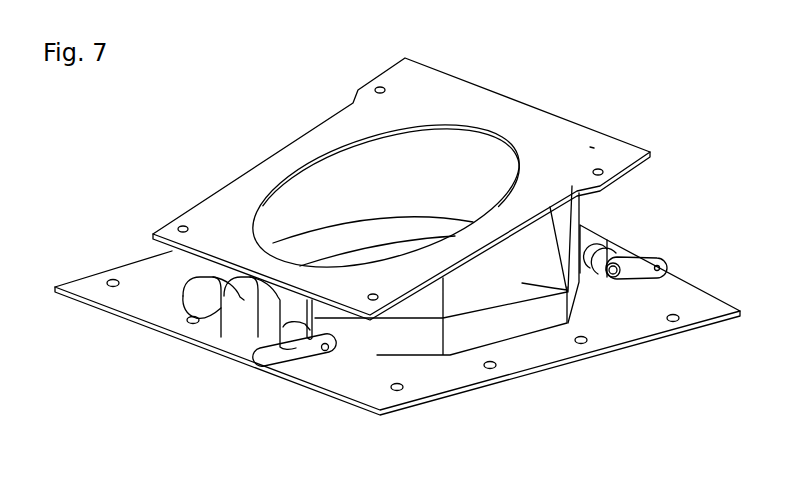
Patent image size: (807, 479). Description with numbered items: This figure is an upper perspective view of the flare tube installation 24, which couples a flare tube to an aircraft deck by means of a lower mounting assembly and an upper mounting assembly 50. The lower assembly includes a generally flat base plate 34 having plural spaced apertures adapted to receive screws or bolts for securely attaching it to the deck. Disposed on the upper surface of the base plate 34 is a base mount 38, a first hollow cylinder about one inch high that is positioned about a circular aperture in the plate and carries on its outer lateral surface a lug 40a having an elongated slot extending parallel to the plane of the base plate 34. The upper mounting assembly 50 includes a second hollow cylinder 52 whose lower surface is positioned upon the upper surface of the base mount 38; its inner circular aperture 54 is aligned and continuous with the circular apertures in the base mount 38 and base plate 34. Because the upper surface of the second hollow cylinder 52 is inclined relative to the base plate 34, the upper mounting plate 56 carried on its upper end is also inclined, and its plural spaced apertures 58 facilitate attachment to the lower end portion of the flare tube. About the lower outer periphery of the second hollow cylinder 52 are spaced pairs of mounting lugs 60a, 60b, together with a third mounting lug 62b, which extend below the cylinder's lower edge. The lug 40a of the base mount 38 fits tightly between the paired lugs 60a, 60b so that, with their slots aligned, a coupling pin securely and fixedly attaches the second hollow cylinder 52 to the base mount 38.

The flare tube installation 24 is at (246, 145).
The base plate 34 is at (693, 298).
The base mount 38 is at (372, 345).
The first lug 40a is at (235, 325).
The upper mounting assembly 50 is at (562, 109).
The second hollow cylinder 52 is at (567, 290).
The inner circular aperture 54 is at (473, 167).
The upper mounting plate 56 is at (593, 146).
The apertures 58 is at (580, 177).
The mounting lug 60a is at (182, 298).
The mounting lug 60b is at (267, 323).
The mounting lug 62b is at (597, 234).